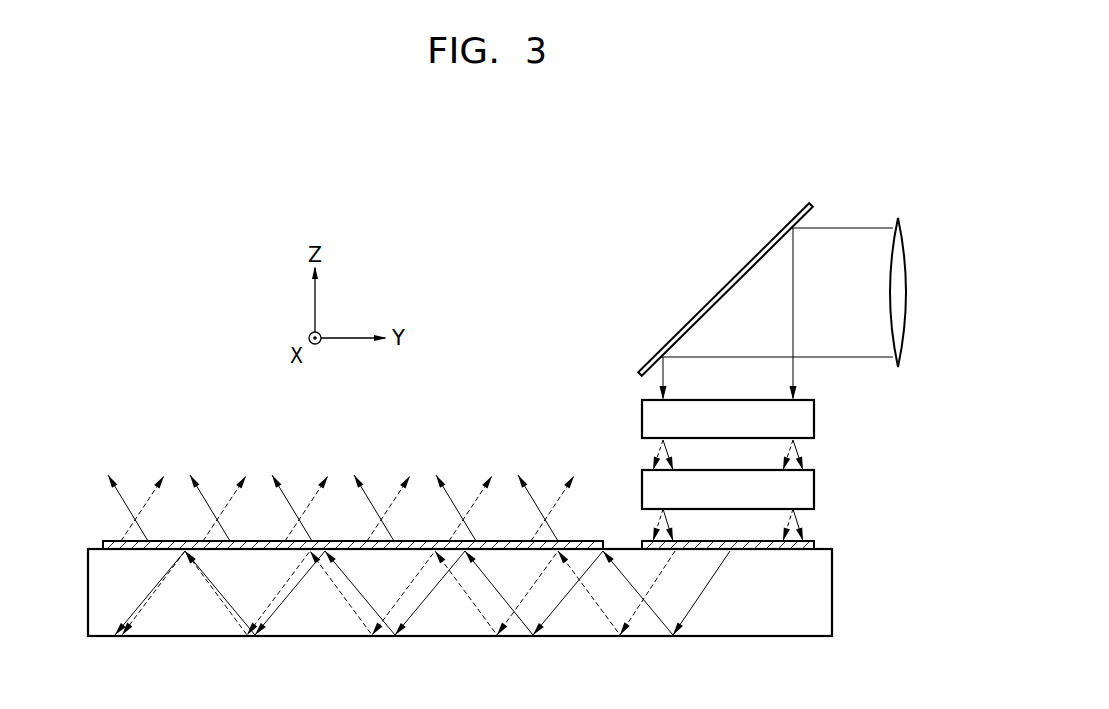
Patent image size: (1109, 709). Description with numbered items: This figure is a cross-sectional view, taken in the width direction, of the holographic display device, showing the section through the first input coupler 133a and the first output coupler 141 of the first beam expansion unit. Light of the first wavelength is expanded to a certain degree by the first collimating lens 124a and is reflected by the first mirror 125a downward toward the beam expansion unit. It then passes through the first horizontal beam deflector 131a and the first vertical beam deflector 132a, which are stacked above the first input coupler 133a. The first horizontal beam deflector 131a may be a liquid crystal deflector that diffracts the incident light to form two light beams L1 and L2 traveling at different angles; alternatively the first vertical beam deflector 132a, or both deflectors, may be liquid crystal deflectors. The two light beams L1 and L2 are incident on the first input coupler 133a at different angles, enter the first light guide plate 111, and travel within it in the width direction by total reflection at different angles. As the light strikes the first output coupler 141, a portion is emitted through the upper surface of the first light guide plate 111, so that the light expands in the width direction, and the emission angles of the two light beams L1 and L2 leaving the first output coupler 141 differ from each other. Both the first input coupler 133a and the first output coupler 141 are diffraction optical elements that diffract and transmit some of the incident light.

The first mirror 125a is at (800, 208).
The first collimating lens 124a is at (903, 232).
The first horizontal beam deflector 131a is at (814, 419).
The first vertical beam deflector 132a is at (814, 489).
The first input coupler 133a is at (814, 546).
The first output coupler 141 is at (104, 545).
The first light guide plate 111 is at (832, 588).
The light beam L1 is at (125, 502).
The light beam L2 is at (147, 500).